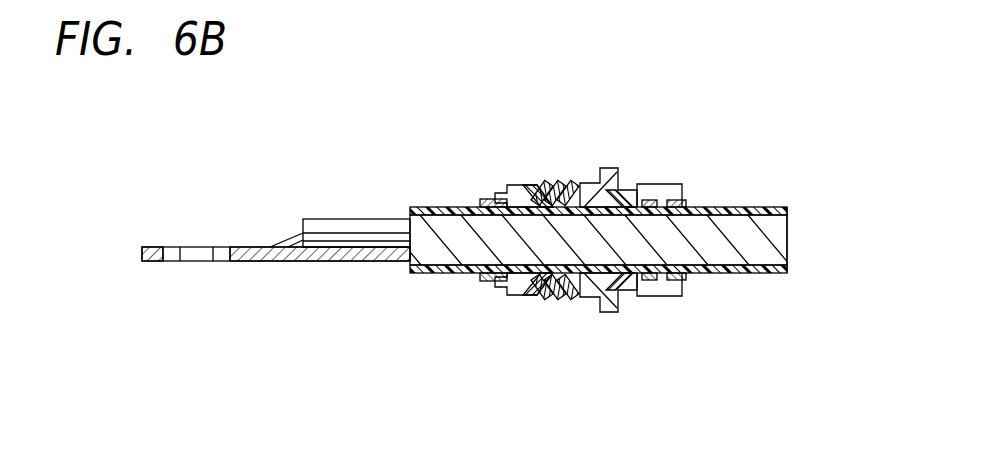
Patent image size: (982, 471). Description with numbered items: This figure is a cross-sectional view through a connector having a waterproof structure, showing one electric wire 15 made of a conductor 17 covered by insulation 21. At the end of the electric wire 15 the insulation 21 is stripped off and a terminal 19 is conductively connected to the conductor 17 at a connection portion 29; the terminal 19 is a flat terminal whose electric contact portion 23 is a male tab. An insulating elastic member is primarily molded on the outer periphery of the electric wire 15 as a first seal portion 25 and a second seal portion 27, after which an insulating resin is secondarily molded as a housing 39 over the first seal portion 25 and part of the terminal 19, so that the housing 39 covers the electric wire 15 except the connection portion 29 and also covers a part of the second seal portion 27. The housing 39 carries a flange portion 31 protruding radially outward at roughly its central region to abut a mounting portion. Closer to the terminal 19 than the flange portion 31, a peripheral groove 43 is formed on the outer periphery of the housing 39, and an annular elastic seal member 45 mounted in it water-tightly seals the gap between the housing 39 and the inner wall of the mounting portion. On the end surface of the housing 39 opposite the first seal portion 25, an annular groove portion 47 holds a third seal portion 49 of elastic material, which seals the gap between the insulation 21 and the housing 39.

The electric wire 15 is at (797, 203).
The conductor 17 is at (768, 242).
The terminal 19 is at (157, 228).
The insulation 21 is at (768, 206).
The electric contact portion 23 is at (143, 262).
The first seal portion 25 is at (655, 188).
The second seal portion 27 is at (686, 188).
The connection portion 29 is at (316, 218).
The flange portion 31 is at (609, 168).
The housing 39 is at (509, 178).
The peripheral groove 43 is at (552, 297).
The elastic seal member 45 is at (548, 183).
The annular groove portion 47 is at (497, 272).
The third seal portion 49 is at (490, 198).